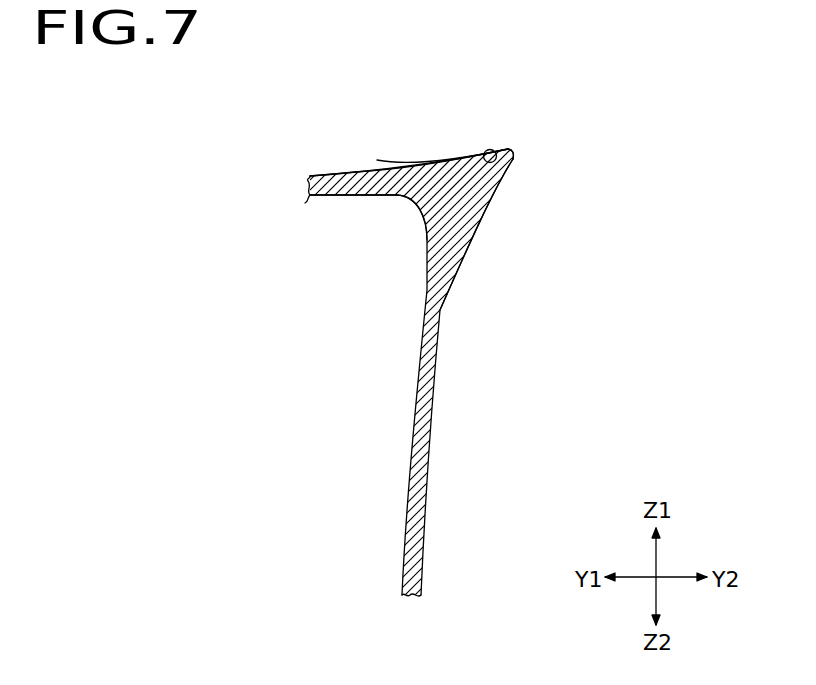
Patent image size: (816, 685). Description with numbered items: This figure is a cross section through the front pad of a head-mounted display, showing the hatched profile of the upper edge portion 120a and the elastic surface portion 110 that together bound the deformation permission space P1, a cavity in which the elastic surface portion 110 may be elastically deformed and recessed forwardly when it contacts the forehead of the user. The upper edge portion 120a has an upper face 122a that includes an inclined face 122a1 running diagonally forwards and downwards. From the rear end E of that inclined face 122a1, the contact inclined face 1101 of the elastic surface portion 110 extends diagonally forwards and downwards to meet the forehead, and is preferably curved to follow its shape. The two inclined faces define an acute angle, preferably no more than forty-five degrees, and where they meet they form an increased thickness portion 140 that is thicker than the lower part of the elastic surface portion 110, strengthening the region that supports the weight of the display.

The elastic surface portion 110 is at (440, 318).
The contact inclined face 1101 is at (523, 166).
The upper edge portion 120a is at (340, 175).
The upper face 122a is at (365, 173).
The inclined face 122a1 is at (507, 130).
The increased thickness portion 140 is at (443, 202).
The rear end of the inclined face E is at (509, 149).
The deformation permission space P1 is at (393, 384).